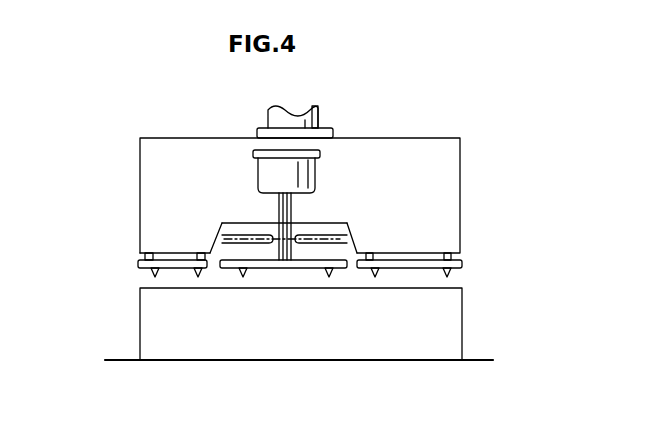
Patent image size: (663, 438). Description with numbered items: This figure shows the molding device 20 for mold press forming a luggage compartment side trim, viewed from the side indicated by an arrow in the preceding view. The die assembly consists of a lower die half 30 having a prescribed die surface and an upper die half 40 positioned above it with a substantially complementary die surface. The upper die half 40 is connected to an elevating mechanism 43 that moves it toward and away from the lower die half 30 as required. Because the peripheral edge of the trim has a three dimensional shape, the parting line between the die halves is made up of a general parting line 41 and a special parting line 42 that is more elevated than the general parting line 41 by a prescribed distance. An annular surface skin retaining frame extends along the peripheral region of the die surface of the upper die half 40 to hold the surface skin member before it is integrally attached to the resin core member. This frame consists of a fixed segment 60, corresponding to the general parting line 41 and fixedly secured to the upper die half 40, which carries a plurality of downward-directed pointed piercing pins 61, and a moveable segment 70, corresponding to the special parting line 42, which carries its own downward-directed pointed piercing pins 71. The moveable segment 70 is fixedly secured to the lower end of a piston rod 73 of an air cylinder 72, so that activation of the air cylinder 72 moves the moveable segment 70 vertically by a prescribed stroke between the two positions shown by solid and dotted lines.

The molding device 20 is at (480, 143).
The lower die half 30 is at (453, 328).
The upper die half 40 is at (438, 188).
The general parting line 41 is at (168, 252).
The special parting line 42 is at (243, 222).
The elevating mechanism 43 is at (318, 122).
The fixed segment 60 is at (140, 265).
The pointed piercing pins 61 is at (196, 276).
The moveable segment 70 is at (352, 222).
The pointed piercing pins 71 is at (243, 273).
The air cylinder 72 is at (312, 176).
The piston rod 73 is at (280, 206).